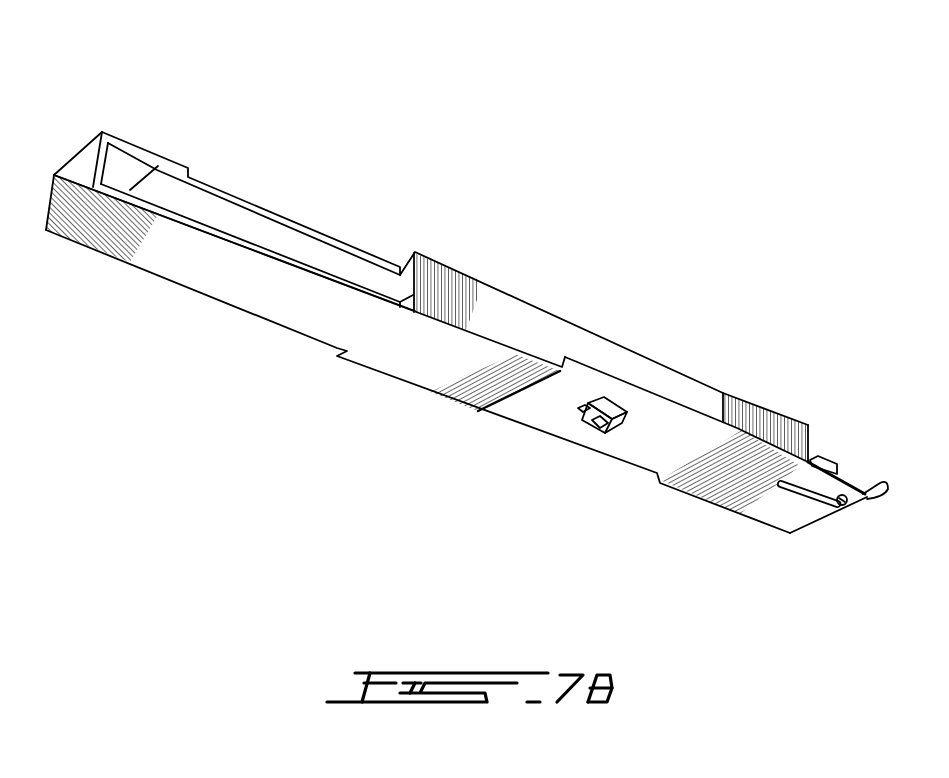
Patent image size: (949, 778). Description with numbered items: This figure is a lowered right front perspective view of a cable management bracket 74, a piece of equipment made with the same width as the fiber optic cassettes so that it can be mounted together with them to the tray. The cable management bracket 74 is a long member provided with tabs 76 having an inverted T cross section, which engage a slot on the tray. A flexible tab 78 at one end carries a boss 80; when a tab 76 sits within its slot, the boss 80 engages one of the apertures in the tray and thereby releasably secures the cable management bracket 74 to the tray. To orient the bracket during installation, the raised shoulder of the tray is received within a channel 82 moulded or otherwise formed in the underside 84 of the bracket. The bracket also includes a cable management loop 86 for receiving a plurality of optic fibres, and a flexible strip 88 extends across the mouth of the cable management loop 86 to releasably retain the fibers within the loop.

The cable management bracket 74 is at (503, 170).
The tab 76 is at (594, 433).
The flexible tab 78 is at (875, 486).
The boss 80 is at (843, 505).
The channel 82 is at (663, 416).
The underside 84 is at (476, 354).
The cable management loop 86 is at (165, 250).
The flexible strip 88 is at (245, 205).